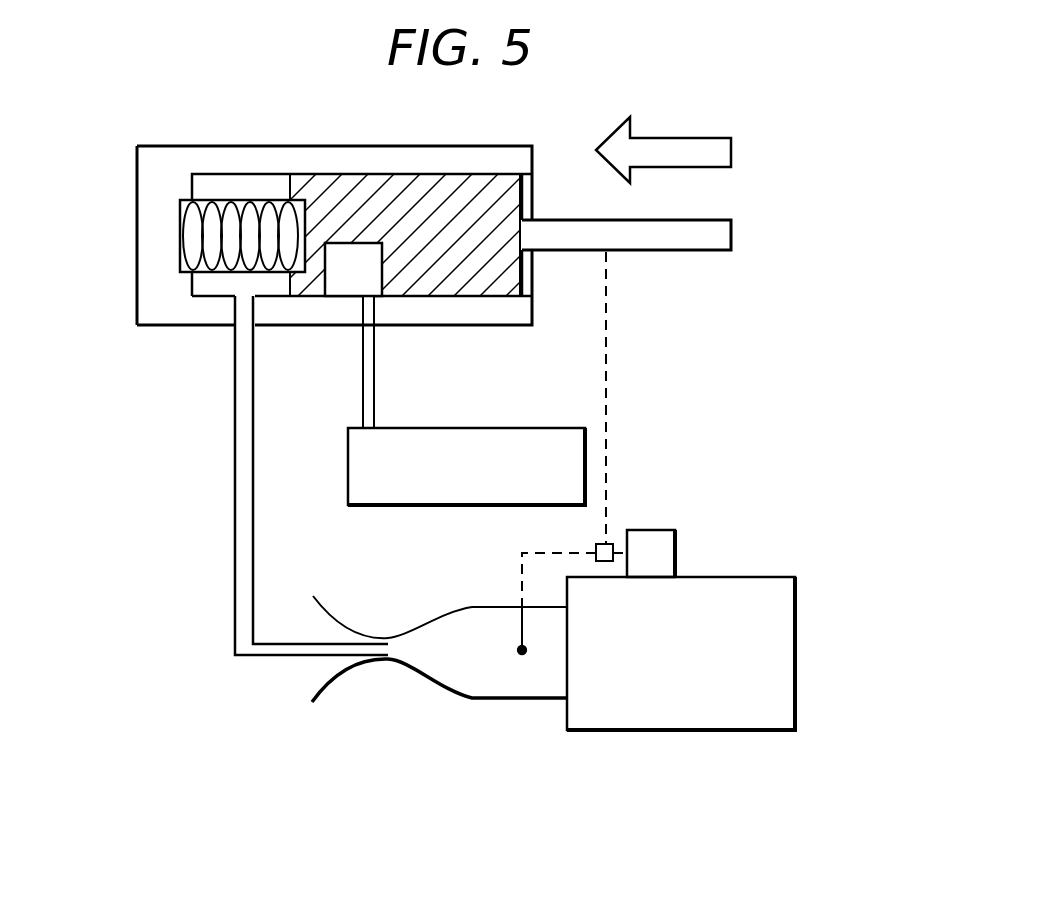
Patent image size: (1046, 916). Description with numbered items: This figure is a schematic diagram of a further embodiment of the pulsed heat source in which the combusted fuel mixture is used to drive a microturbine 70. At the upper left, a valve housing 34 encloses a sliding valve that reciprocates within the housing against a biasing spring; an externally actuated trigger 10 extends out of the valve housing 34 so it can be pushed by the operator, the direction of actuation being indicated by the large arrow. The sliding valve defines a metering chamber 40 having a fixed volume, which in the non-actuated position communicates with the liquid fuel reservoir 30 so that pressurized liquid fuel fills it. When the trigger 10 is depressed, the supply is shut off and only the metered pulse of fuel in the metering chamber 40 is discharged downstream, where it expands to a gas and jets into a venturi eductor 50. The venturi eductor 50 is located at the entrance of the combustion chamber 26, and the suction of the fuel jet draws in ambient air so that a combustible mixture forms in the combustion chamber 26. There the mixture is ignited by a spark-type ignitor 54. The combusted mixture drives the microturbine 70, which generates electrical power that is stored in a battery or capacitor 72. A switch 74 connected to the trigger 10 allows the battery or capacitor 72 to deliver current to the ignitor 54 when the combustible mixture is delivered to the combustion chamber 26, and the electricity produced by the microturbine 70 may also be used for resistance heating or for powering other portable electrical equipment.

The trigger section 10 is at (688, 240).
The combustion chamber 26 is at (498, 670).
The liquid fuel reservoir 30 is at (467, 455).
The valve housing 34 is at (150, 286).
The metering chamber 40 is at (348, 270).
The venturi eductor 50 is at (392, 612).
The spark-type ignitor 54 is at (533, 680).
The microturbine 70 is at (767, 652).
The battery or capacitor 72 is at (662, 553).
The switch 74 is at (610, 543).